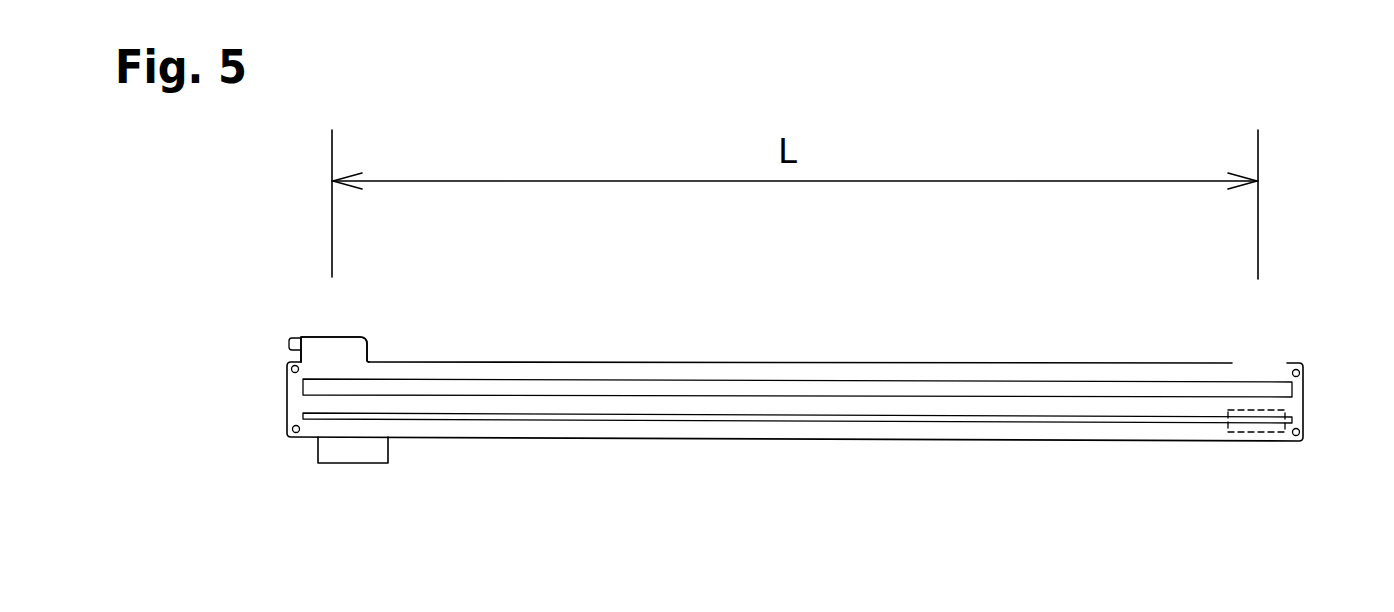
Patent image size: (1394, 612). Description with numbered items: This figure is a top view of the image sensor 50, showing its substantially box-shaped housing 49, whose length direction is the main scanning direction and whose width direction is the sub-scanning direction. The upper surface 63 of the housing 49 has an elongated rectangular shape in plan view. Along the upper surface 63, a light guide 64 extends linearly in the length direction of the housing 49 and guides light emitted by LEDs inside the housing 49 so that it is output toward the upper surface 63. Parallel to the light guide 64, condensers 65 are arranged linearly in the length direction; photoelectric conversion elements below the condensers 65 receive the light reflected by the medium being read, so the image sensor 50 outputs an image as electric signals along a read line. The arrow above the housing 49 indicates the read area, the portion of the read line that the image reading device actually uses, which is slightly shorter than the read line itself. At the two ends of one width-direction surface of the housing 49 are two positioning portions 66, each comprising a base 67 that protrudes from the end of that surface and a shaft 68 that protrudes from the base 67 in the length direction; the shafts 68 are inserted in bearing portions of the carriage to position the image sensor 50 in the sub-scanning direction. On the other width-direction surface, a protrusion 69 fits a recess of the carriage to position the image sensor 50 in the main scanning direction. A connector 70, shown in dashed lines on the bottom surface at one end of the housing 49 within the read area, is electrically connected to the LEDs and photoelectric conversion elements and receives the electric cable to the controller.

The housing 49 is at (895, 441).
The image sensor 50 is at (1013, 470).
The upper surface 63 is at (617, 370).
The light guide 64 is at (518, 380).
The condensers 65 is at (518, 420).
The positioning portions 66 is at (313, 321).
The base 67 is at (347, 337).
The shaft 68 is at (288, 343).
The protrusion 69 is at (330, 467).
The connector 70 is at (1262, 432).